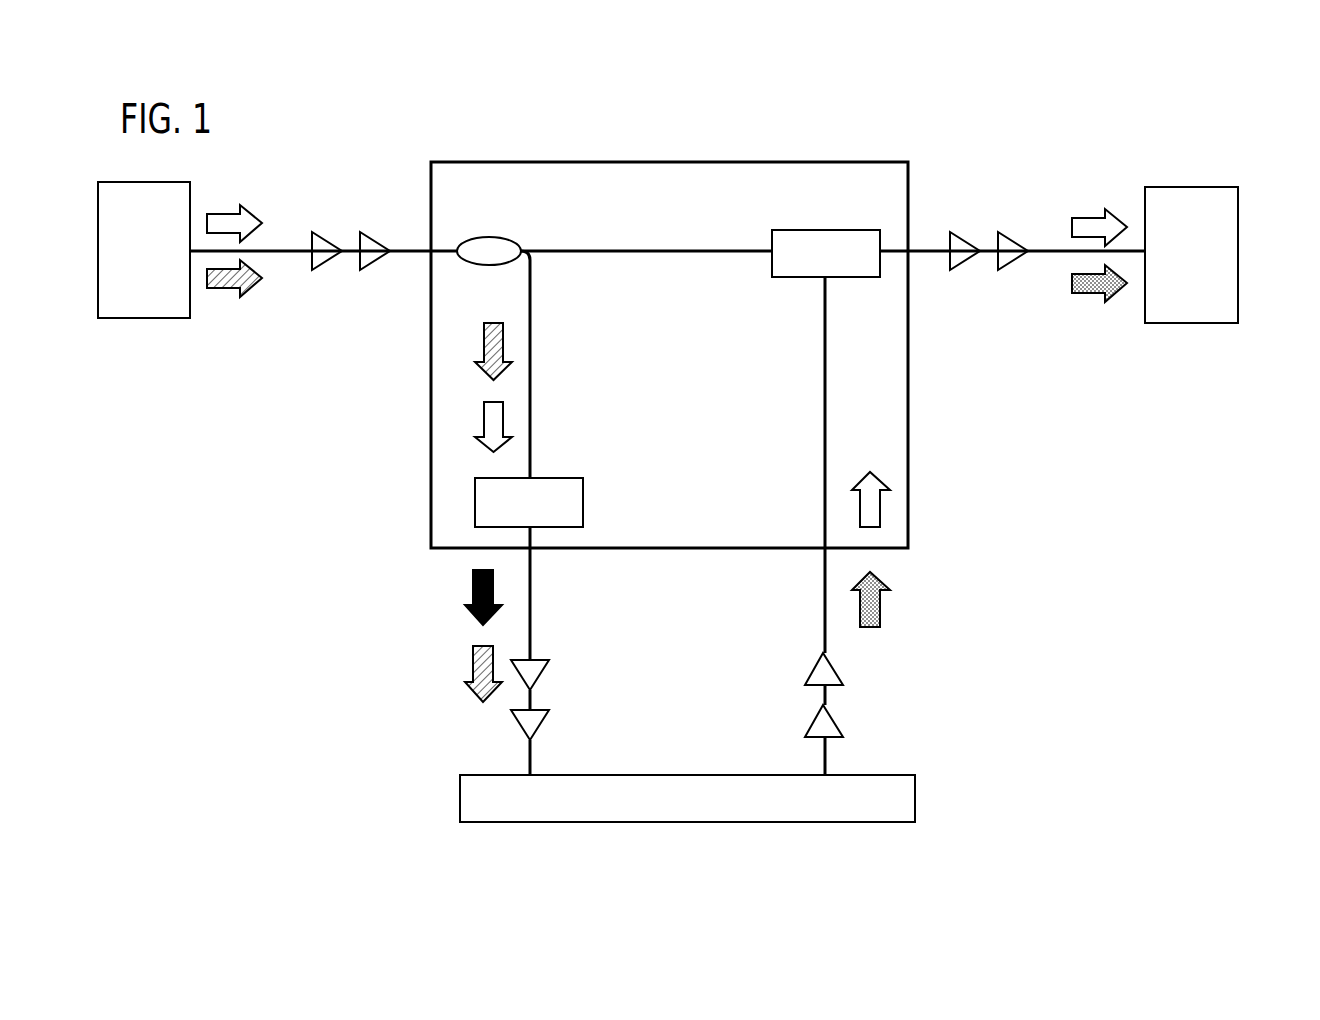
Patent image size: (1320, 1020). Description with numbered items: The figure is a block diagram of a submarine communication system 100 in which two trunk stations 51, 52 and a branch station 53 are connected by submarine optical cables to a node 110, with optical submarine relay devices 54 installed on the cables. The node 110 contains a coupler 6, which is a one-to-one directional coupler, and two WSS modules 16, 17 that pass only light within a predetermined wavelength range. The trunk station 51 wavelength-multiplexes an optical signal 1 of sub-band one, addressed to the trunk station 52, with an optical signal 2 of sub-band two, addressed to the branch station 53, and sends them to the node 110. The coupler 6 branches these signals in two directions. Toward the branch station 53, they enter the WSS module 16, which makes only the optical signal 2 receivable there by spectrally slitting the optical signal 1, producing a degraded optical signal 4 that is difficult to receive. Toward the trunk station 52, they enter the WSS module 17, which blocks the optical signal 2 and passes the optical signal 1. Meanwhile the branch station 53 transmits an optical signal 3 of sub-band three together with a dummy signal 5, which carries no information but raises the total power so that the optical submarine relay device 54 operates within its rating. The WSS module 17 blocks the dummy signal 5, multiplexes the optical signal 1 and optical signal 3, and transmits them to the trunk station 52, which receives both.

The optical signal 1 is at (217, 213).
The optical signal 2 is at (216, 297).
The optical signal 3 is at (882, 612).
The optical signal 4 is at (470, 580).
The dummy signal 5 is at (880, 512).
The coupler 6 is at (492, 235).
The WSS module 16 is at (569, 476).
The WSS module 17 is at (860, 229).
The trunk station 51 is at (128, 318).
The trunk station 52 is at (1172, 323).
The branch station 53 is at (915, 782).
The optical submarine relay device 54 is at (832, 657).
The submarine communication system 100 is at (872, 140).
The node 110 is at (908, 410).